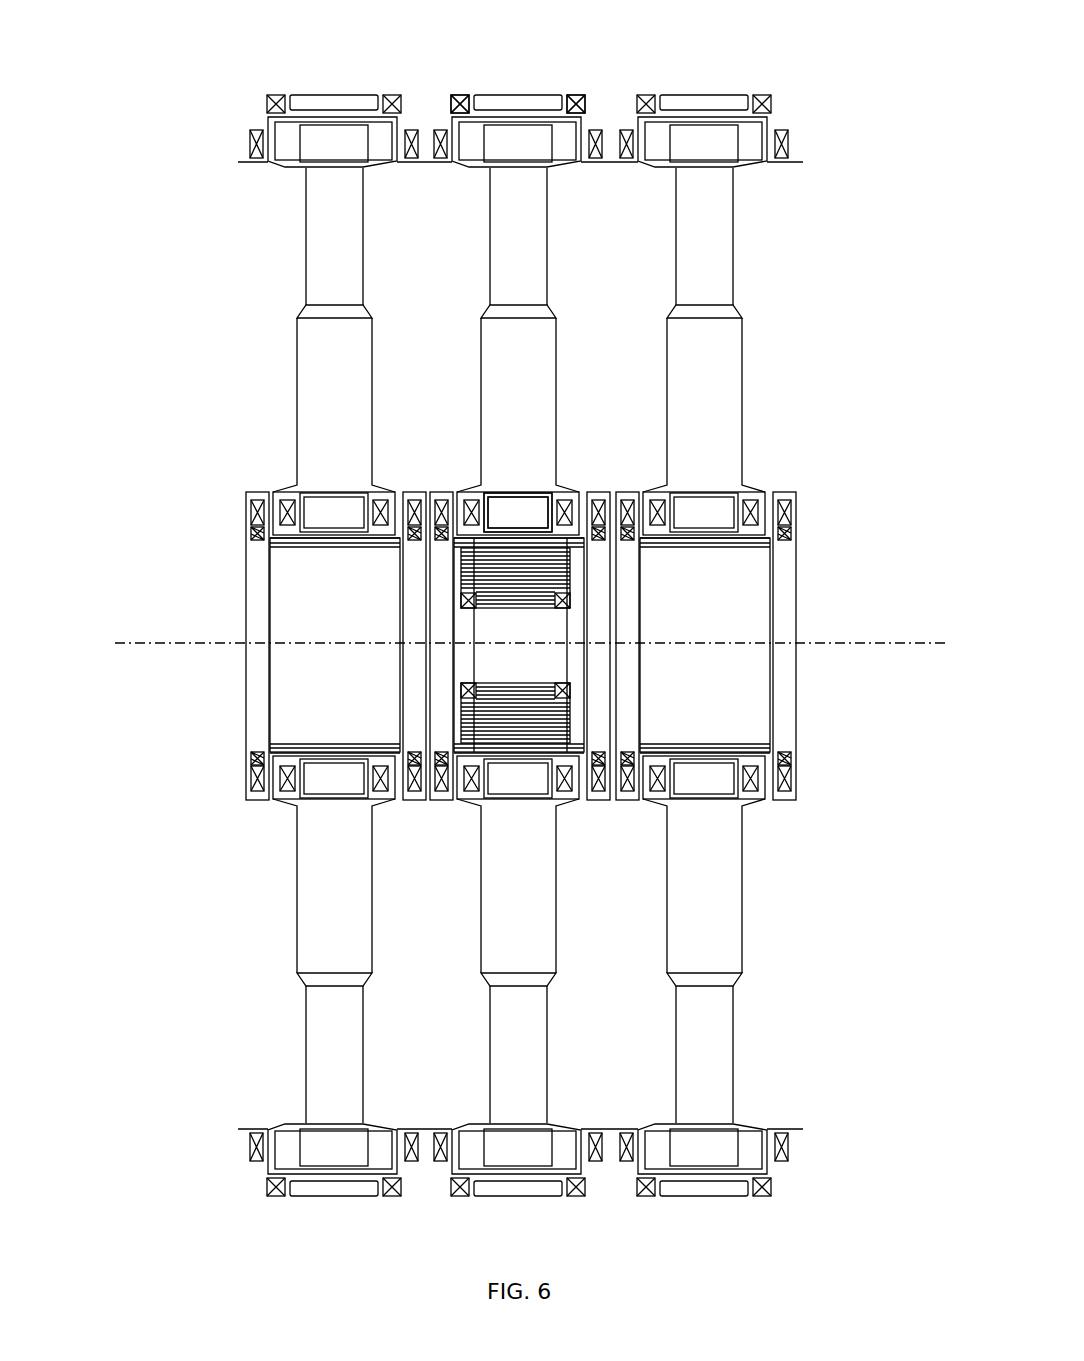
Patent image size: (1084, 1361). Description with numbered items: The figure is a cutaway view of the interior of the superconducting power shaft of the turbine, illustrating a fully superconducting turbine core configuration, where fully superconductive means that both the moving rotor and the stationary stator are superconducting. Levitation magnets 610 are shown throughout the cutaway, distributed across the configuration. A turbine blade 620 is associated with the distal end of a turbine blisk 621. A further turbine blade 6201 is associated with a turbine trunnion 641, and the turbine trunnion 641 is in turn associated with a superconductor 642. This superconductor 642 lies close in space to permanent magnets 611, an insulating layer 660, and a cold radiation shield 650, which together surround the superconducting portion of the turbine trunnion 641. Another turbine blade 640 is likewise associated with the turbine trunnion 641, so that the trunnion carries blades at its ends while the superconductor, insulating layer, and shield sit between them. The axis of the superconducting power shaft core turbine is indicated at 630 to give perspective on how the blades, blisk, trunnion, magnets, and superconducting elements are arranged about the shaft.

The levitation magnets 610 is at (466, 95).
The permanent magnets 611 is at (424, 483).
The turbine blade 620 is at (316, 236).
The turbine blisk 621 is at (290, 313).
The turbine blade 6201 is at (532, 243).
The axis of the SPSC turbine 630 is at (495, 647).
The turbine blade 640 is at (534, 1041).
The turbine trunnion 641 is at (535, 377).
The superconductor 642 is at (518, 512).
The cold radiation shield 650 is at (582, 568).
The insulating layer 660 is at (573, 552).